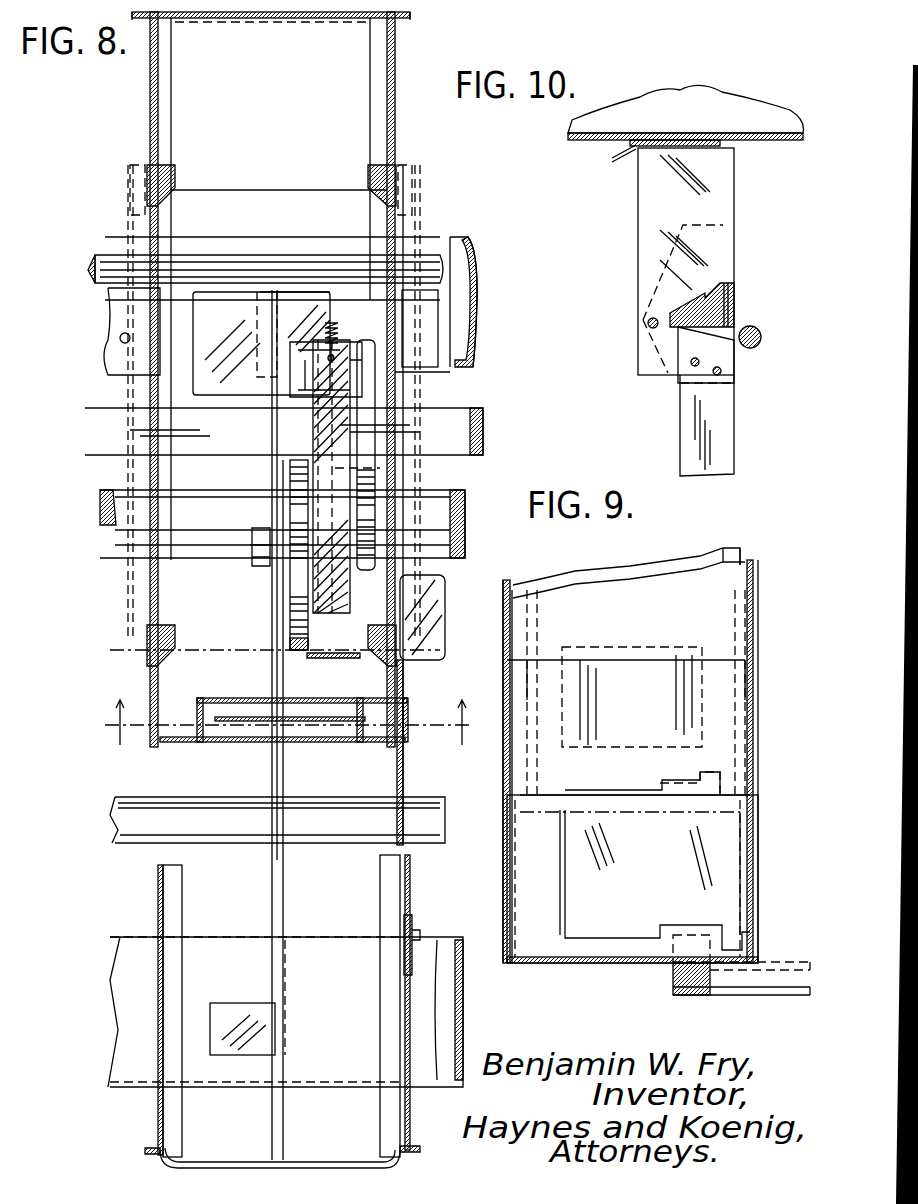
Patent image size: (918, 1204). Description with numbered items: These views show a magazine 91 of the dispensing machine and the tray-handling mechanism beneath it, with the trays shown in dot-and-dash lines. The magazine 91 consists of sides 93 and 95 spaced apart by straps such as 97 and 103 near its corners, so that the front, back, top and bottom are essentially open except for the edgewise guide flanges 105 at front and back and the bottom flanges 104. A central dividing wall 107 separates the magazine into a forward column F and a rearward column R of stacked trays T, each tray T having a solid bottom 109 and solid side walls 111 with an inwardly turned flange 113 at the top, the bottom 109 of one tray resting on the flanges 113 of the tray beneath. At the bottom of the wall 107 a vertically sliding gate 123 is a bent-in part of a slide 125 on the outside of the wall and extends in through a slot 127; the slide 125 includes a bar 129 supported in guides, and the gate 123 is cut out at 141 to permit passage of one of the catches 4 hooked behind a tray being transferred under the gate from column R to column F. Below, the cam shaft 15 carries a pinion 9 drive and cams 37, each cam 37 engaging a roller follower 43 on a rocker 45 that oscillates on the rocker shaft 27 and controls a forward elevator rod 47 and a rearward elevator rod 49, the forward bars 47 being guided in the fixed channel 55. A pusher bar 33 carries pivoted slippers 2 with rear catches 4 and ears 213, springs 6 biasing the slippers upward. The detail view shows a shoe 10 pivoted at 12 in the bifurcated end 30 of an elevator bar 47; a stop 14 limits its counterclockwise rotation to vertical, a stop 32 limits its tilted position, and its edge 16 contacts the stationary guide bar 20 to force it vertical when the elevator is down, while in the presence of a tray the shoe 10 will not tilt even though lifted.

In FIG. 8, the slipper 2 is at (318, 594).
In FIG. 9, the slipper 2 is at (672, 996).
In FIG. 8, the rear catch 4 is at (345, 660).
In FIG. 9, the rear catch 4 is at (690, 932).
In FIG. 8, the spring 6 is at (338, 328).
In FIG. 8, the pinion 9 is at (288, 728).
In FIG. 8, the shoe 10 is at (240, 300).
In FIG. 10, the shoe 10 is at (650, 218).
In FIG. 10, the pivot 12 is at (646, 328).
In FIG. 10, the stop 14 is at (675, 380).
In FIG. 8, the cam shaft 15 is at (110, 526).
In FIG. 10, the edge 16 is at (736, 216).
In FIG. 8, the stationary guide bar 20 is at (112, 262).
In FIG. 10, the stationary guide bar 20 is at (762, 343).
In FIG. 8, the rocker shaft 27 is at (142, 816).
In FIG. 8, the bifurcated end 30 is at (275, 300).
In FIG. 10, the bifurcated end 30 is at (720, 312).
In FIG. 10, the stop 32 is at (726, 283).
In FIG. 8, the pusher bar 33 is at (470, 412).
In FIG. 8, the cam 37 is at (290, 628).
In FIG. 8, the roller follower 43 is at (262, 566).
In FIG. 8, the rocker 45 is at (270, 468).
In FIG. 8, the forward elevator rod 47 is at (258, 327).
In FIG. 10, the forward elevator rod 47 is at (738, 440).
In FIG. 8, the rearward elevator rod 49 is at (262, 1018).
In FIG. 8, the fixed channel 55 is at (108, 338).
In FIG. 8, the magazine 91 is at (149, 890).
In FIG. 9, the magazine 91 is at (770, 630).
In FIG. 8, the side 93 is at (395, 117).
In FIG. 9, the side 93 is at (754, 580).
In FIG. 8, the side 95 is at (150, 108).
In FIG. 9, the side 95 is at (510, 845).
In FIG. 8, the strap 97 is at (260, 180).
In FIG. 8, the strap 103 is at (278, 1168).
In FIG. 8, the bottom flange 104 is at (180, 896).
In FIG. 9, the bottom flange 104 is at (528, 968).
In FIG. 8, the guide flange 105 is at (135, 22).
In FIG. 8, the central dividing wall 107 is at (203, 712).
In FIG. 9, the central dividing wall 107 is at (646, 568).
In FIG. 9, the tray bottom 109 is at (625, 658).
In FIG. 9, the side wall 111 is at (515, 612).
In FIG. 9, the inwardly turned flange 113 is at (530, 672).
In FIG. 8, the gate 123 is at (243, 716).
In FIG. 9, the gate 123 is at (598, 792).
In FIG. 8, the slide 125 is at (406, 778).
In FIG. 8, the slot 127 is at (400, 730).
In FIG. 8, the bar 129 is at (410, 930).
In FIG. 9, the cut-out 141 is at (696, 772).
In FIG. 8, the ear 213 is at (440, 622).
In FIG. 9, the ear 213 is at (800, 962).
In FIG. 8, the tray T is at (385, 86).
In FIG. 8, the forward column F is at (242, 216).
In FIG. 8, the rearward column R is at (242, 880).